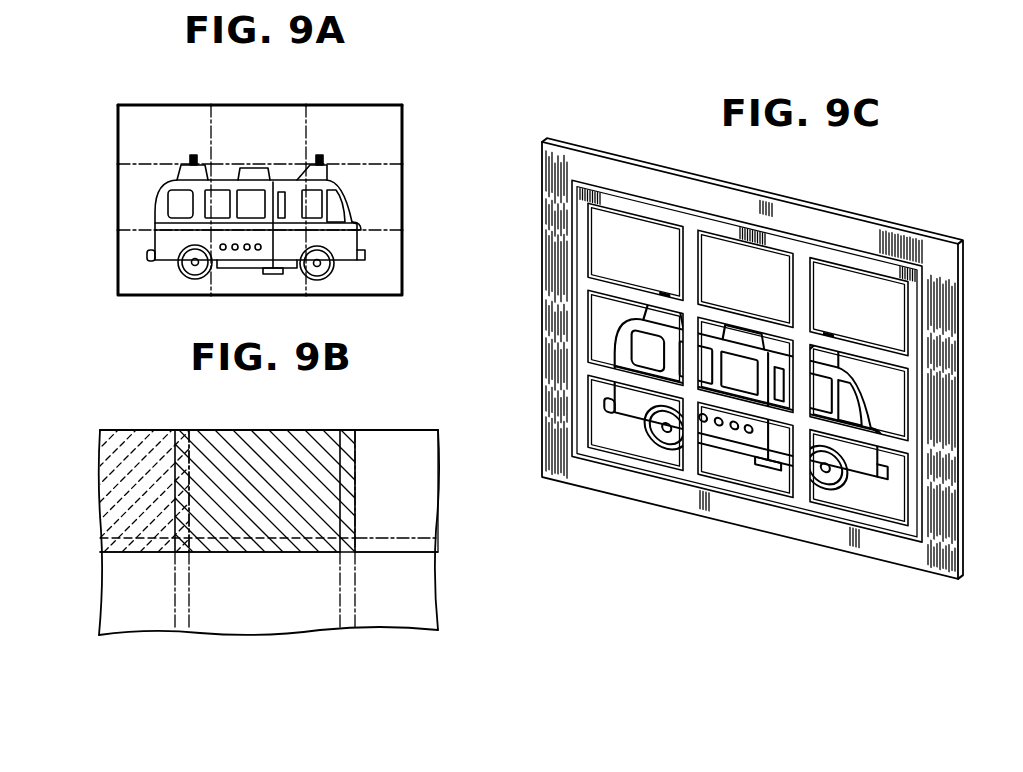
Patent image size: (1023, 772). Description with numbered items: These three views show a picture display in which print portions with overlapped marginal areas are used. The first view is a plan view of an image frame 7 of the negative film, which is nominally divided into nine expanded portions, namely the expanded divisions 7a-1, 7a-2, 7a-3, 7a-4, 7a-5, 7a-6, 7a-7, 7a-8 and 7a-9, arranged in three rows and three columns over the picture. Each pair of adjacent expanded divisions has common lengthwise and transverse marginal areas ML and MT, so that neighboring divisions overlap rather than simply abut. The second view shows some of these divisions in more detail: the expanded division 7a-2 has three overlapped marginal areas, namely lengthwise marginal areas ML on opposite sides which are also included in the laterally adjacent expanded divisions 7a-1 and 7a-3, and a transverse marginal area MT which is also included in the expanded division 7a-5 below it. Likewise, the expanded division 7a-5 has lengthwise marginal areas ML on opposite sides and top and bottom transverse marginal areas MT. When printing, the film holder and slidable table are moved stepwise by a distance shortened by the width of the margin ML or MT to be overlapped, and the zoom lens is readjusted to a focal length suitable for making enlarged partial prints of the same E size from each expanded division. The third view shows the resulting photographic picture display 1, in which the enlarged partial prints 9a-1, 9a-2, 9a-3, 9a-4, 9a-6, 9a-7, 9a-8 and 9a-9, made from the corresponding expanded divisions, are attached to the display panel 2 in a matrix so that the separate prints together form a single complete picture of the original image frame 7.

In FIG. 9A, the expanded division 7a-1 is at (352, 112).
In FIG. 9B, the expanded division 7a-1 is at (118, 496).
In FIG. 9A, the expanded division 7a-2 is at (256, 112).
In FIG. 9B, the expanded division 7a-2 is at (262, 450).
In FIG. 9A, the expanded division 7a-3 is at (166, 112).
In FIG. 9B, the expanded division 7a-3 is at (413, 500).
In FIG. 9A, the expanded division 7a-4 is at (133, 198).
In FIG. 9B, the expanded division 7a-4 is at (420, 592).
In FIG. 9B, the expanded division 7a-5 is at (315, 615).
In FIG. 9A, the expanded division 7a-6 is at (386, 202).
In FIG. 9B, the expanded division 7a-6 is at (120, 591).
In FIG. 9A, the expanded division 7a-7 is at (355, 285).
In FIG. 9A, the expanded division 7a-8 is at (258, 285).
In FIG. 9A, the expanded division 7a-9 is at (170, 285).
In FIG. 9B, the image frame 7 is at (207, 420).
In FIG. 9B, the lengthwise marginal area ML is at (182, 430).
In FIG. 9B, the transverse marginal area MT is at (277, 552).
In FIG. 9C, the photographic picture display 1 is at (850, 197).
In FIG. 9C, the display panel 2 is at (906, 237).
In FIG. 9C, the enlarged partial print 9a-1 is at (636, 225).
In FIG. 9C, the enlarged partial print 9a-2 is at (746, 250).
In FIG. 9C, the enlarged partial print 9a-3 is at (898, 311).
In FIG. 9C, the enlarged partial print 9a-4 is at (893, 390).
In FIG. 9C, the enlarged partial print 9a-6 is at (598, 323).
In FIG. 9C, the enlarged partial print 9a-7 is at (620, 440).
In FIG. 9C, the enlarged partial print 9a-8 is at (735, 470).
In FIG. 9C, the enlarged partial print 9a-9 is at (856, 501).